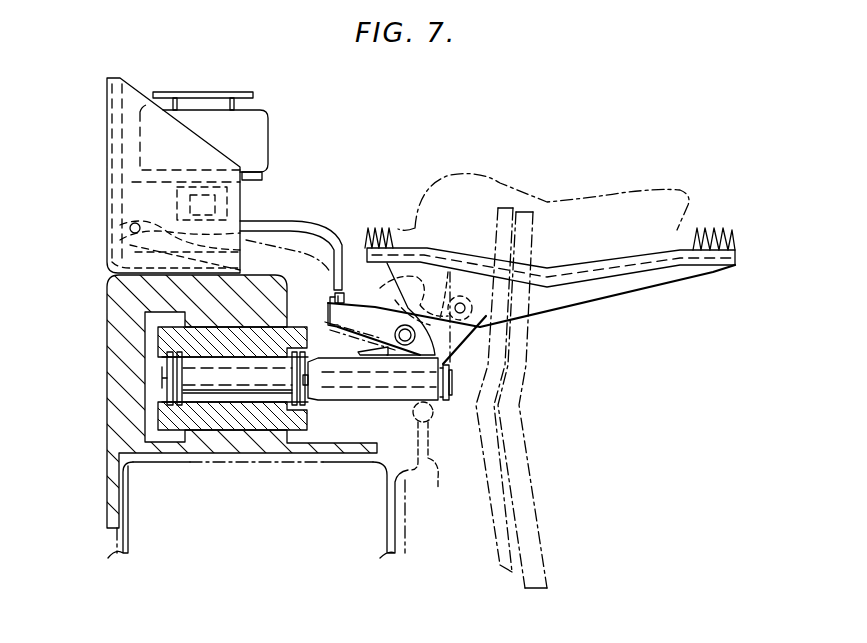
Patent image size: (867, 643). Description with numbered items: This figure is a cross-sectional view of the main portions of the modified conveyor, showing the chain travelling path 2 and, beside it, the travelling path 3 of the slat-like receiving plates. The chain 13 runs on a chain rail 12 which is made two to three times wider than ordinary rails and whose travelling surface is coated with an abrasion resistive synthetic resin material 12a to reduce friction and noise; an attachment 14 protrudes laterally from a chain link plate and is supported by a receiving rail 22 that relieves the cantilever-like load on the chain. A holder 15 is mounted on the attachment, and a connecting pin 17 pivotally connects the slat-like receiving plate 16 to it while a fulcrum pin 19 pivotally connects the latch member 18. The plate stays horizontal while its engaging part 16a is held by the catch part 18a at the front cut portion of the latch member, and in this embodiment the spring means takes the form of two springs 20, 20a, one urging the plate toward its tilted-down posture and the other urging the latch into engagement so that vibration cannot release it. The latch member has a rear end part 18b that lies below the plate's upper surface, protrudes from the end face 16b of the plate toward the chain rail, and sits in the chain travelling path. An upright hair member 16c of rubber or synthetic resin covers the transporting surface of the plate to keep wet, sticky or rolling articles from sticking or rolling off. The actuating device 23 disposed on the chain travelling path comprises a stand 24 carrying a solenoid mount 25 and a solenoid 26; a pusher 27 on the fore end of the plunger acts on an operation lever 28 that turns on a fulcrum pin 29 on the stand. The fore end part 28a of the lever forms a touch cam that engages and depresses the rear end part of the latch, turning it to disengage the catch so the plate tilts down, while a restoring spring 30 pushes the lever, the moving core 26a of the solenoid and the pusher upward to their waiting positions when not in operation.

The chain travelling path 2 is at (162, 287).
The travelling path of slat-like receiving plates 3 is at (540, 190).
The chain rail 12 is at (248, 462).
The abrasion resistive synthetic resin material 12a is at (196, 418).
The chain 13 is at (158, 380).
The attachment 14 is at (447, 402).
The holder 15 is at (320, 402).
The slat-like receiving plate 16 is at (662, 280).
The engaging part 16a is at (462, 303).
The end face 16b is at (365, 232).
The upright hair member 16c is at (705, 233).
The connecting pin 17 is at (456, 332).
The latch member 18 is at (397, 306).
The catch part 18a is at (428, 240).
The rear end part 18b is at (357, 300).
The fulcrum pin 19 is at (404, 346).
The spring 20 is at (538, 322).
The spring 20a is at (378, 400).
The receiving rail 22 is at (430, 470).
The actuating device 23 is at (105, 90).
The stand 24 is at (105, 148).
The solenoid mount 25 is at (262, 175).
The solenoid 26 is at (192, 110).
The moving core 26a is at (215, 92).
The pusher 27 is at (177, 200).
The operation lever 28 is at (280, 221).
The fore end part 28a is at (332, 296).
The fulcrum pin 29 is at (130, 228).
The restoring spring 30 is at (107, 258).